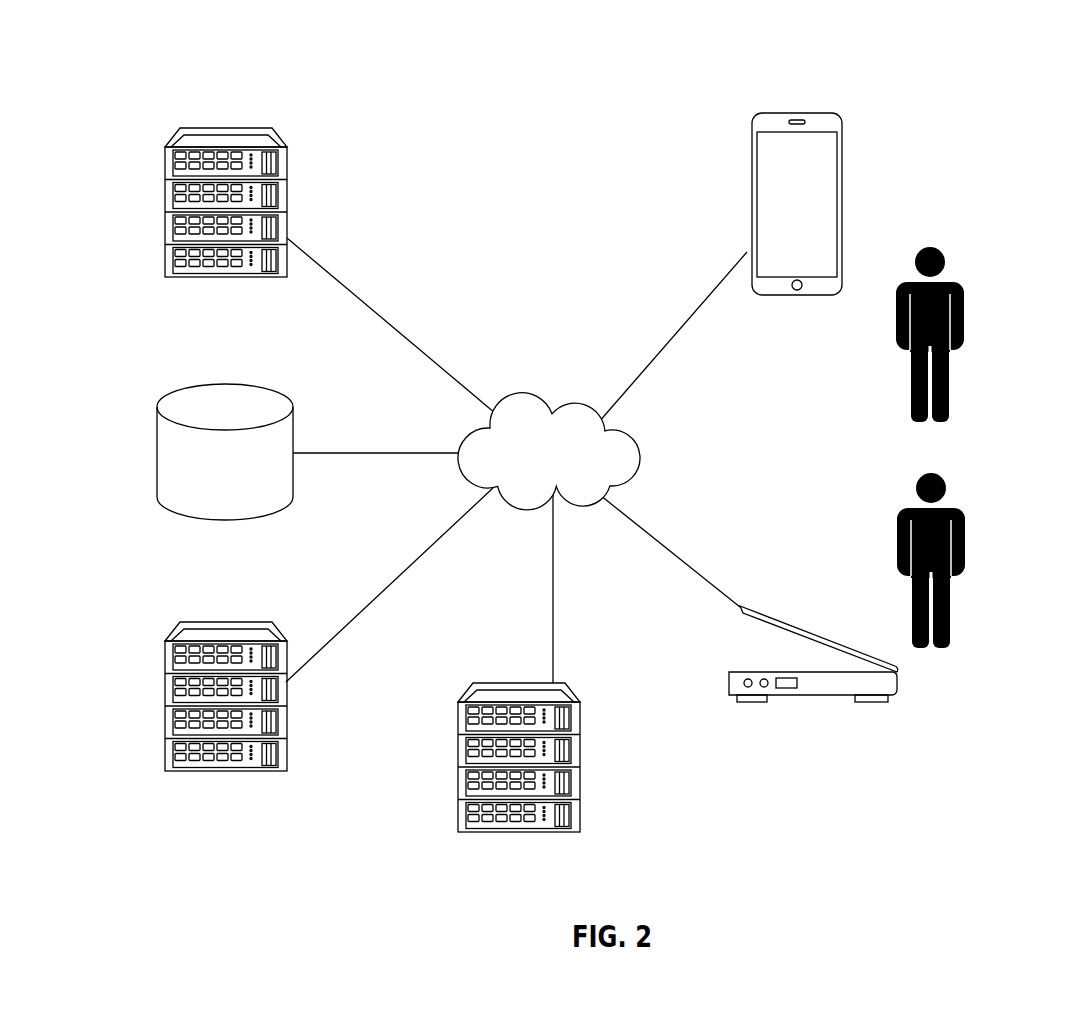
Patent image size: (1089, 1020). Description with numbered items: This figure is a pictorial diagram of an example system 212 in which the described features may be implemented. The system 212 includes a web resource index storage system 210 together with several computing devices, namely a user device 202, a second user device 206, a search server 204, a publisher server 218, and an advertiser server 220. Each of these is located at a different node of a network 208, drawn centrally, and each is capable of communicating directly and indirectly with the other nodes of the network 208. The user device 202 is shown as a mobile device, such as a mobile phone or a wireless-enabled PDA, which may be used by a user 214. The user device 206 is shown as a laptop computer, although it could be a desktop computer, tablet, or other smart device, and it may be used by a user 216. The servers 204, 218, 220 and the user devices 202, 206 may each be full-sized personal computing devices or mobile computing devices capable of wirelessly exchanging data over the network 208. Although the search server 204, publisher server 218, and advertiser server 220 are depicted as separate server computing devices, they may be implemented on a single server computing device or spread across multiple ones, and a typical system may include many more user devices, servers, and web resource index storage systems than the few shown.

The user device 202 is at (843, 207).
The search server 204 is at (165, 157).
The user device 206 is at (897, 690).
The network 208 is at (565, 467).
The web resource index storage system 210 is at (157, 408).
The system 212 is at (346, 82).
The user 214 is at (952, 373).
The user 216 is at (950, 602).
The publisher server 218 is at (165, 643).
The advertiser server 220 is at (458, 712).